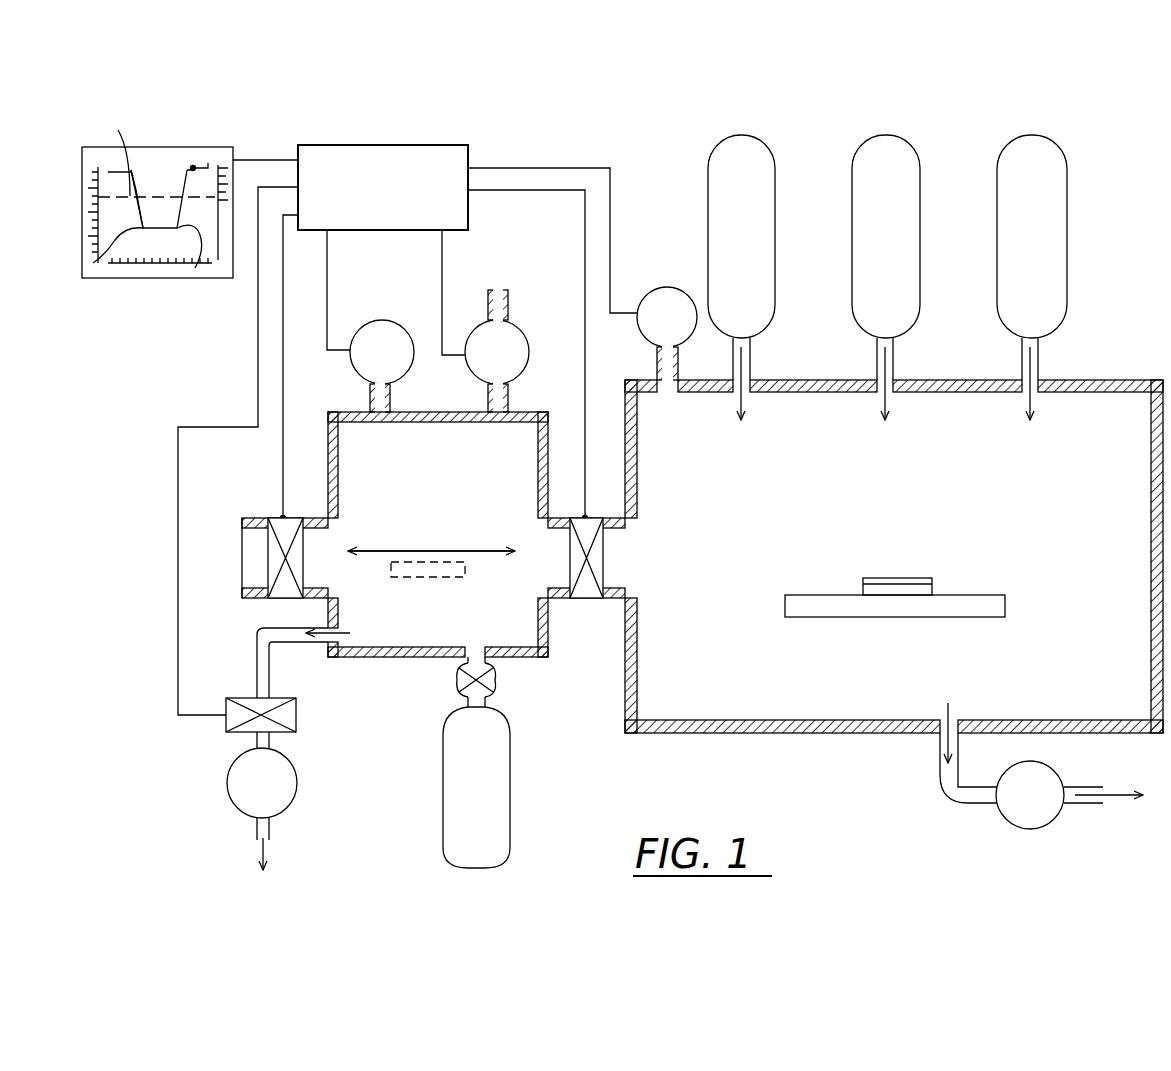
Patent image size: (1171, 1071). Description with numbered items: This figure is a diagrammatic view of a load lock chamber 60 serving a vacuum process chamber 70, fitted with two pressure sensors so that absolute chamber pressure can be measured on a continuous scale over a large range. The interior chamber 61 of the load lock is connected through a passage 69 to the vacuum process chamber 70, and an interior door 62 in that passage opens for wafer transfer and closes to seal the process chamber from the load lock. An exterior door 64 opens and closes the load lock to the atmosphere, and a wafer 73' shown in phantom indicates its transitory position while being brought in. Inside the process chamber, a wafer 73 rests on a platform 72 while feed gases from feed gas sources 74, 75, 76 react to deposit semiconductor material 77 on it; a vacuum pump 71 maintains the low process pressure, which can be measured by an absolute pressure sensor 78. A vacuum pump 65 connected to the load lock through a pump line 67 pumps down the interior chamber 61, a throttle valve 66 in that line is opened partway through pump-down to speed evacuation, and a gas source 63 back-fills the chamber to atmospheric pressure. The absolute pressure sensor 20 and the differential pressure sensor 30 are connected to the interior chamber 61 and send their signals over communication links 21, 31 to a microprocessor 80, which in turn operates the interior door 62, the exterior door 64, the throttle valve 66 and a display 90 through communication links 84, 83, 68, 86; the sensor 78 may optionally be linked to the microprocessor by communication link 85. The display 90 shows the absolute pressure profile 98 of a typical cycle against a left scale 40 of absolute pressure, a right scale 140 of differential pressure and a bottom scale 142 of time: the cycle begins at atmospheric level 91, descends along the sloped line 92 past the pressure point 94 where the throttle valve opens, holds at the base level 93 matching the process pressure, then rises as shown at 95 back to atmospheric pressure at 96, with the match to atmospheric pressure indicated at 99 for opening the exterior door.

The absolute pressure sensor 20 is at (390, 321).
The communication link 21 is at (327, 270).
The differential pressure sensor 30 is at (520, 318).
The communication link 31 is at (442, 288).
The scale 40 is at (96, 214).
The load lock chamber 60 is at (355, 408).
The interior chamber 61 is at (425, 518).
The interior door 62 is at (595, 510).
The gas source 63 is at (443, 803).
The exterior door 64 is at (275, 600).
The vacuum pump 65 is at (226, 773).
The throttle valve 66 is at (298, 715).
The pump line 67 is at (295, 645).
The communication link 68 is at (178, 683).
The passage 69 is at (618, 586).
The vacuum process chamber 70 is at (1105, 378).
The vacuum pump 71 is at (1055, 770).
The platform 72 is at (995, 595).
The wafer 73 is at (897, 573).
The wafer in phantom lines 73' is at (442, 583).
The feed gas source 74 is at (708, 140).
The feed gas source 75 is at (852, 140).
The feed gas source 76 is at (1003, 140).
The semiconductor material 77 is at (880, 578).
The absolute pressure sensor 78 is at (672, 287).
The microprocessor 80 is at (445, 145).
The communication link 83 is at (283, 462).
The communication link 84 is at (585, 224).
The communication link 85 is at (610, 204).
The communication link 86 is at (300, 146).
The display 90 is at (142, 212).
The atmospheric pressure level 91 is at (112, 172).
The sloped line 92 is at (108, 238).
The base level pressure 93 is at (106, 264).
The pressure point 94 is at (133, 190).
The rising pressure portion 95 is at (195, 268).
The atmospheric pressure level 96 is at (200, 168).
The absolute pressure profile 98 is at (152, 196).
The atmospheric match indication 99 is at (176, 188).
The scale 140 is at (252, 158).
The scale 142 is at (142, 268).